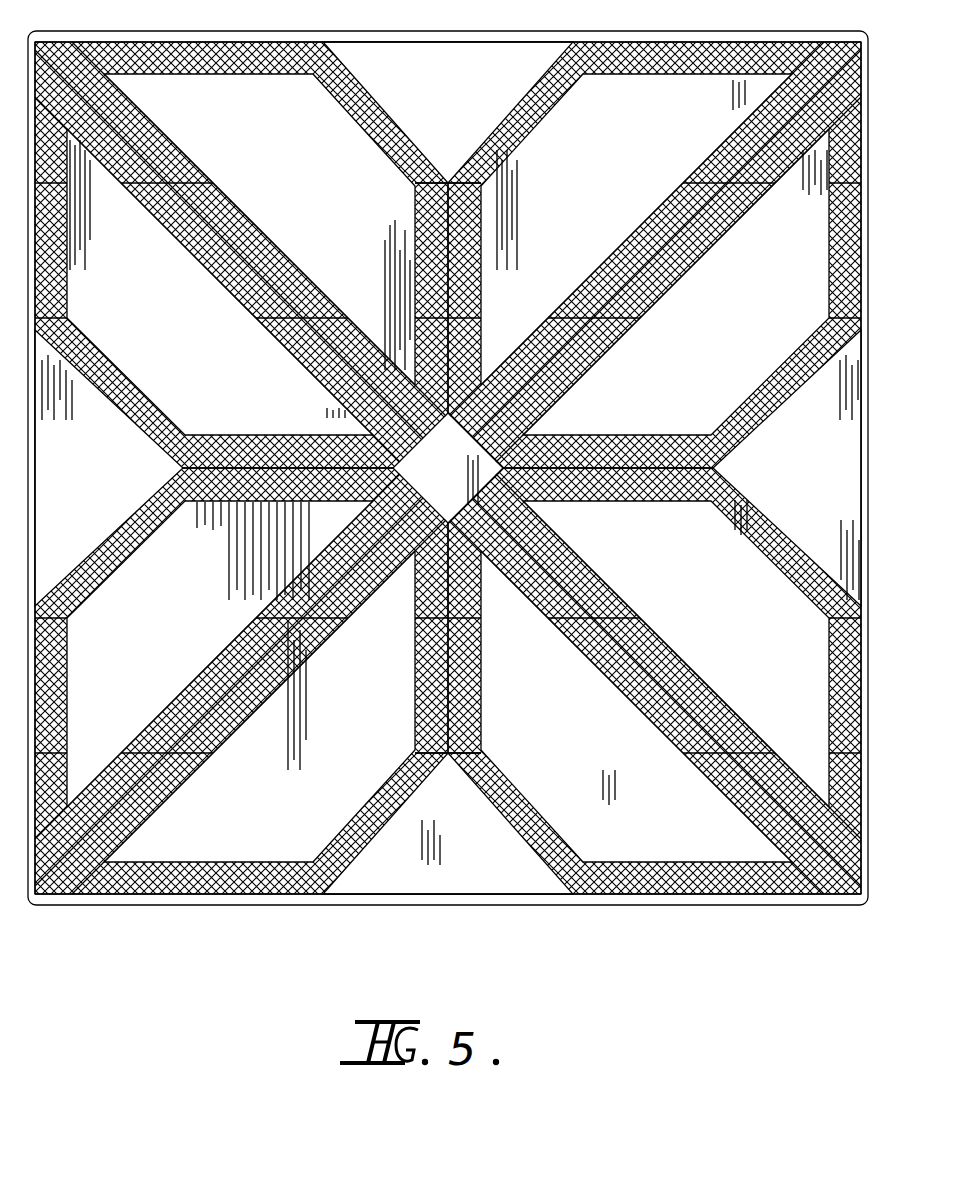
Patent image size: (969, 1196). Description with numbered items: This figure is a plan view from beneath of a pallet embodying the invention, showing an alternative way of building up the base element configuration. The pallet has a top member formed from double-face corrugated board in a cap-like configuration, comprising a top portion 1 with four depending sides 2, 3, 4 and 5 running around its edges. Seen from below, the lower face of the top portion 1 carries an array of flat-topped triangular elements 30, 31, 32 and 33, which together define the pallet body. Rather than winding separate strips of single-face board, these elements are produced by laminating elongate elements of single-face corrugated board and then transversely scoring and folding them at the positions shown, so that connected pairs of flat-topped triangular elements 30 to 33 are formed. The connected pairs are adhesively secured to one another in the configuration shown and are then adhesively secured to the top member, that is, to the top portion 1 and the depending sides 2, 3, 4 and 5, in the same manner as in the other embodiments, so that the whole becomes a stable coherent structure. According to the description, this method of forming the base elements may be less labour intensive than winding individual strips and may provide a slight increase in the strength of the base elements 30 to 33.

The top portion 1 is at (547, 764).
The depending side 2 is at (470, 40).
The depending side 3 is at (862, 492).
The depending side 4 is at (489, 892).
The depending side 5 is at (35, 492).
The flat-topped triangular element 30 is at (236, 194).
The flat-topped triangular element 31 is at (672, 87).
The flat-topped triangular element 32 is at (762, 544).
The flat-topped triangular element 33 is at (153, 510).